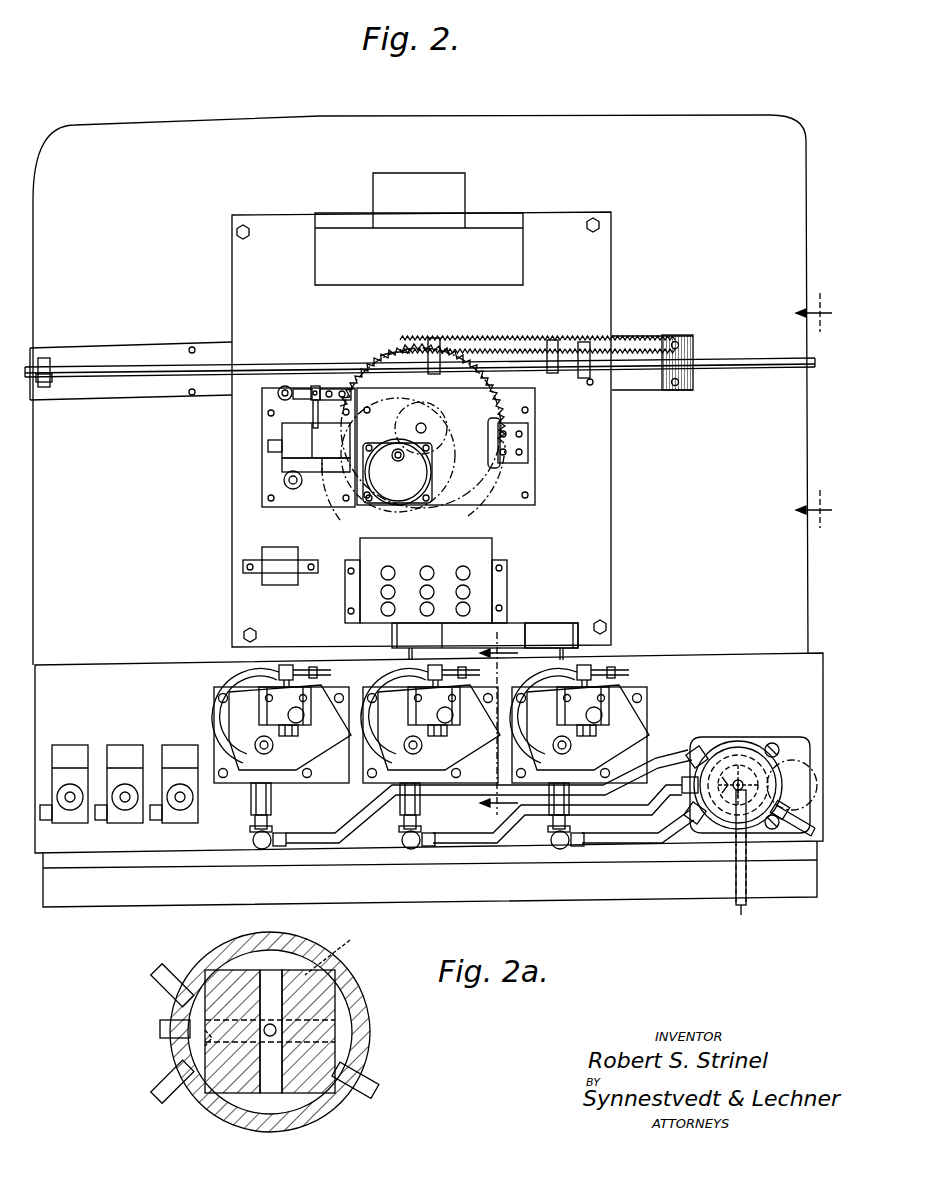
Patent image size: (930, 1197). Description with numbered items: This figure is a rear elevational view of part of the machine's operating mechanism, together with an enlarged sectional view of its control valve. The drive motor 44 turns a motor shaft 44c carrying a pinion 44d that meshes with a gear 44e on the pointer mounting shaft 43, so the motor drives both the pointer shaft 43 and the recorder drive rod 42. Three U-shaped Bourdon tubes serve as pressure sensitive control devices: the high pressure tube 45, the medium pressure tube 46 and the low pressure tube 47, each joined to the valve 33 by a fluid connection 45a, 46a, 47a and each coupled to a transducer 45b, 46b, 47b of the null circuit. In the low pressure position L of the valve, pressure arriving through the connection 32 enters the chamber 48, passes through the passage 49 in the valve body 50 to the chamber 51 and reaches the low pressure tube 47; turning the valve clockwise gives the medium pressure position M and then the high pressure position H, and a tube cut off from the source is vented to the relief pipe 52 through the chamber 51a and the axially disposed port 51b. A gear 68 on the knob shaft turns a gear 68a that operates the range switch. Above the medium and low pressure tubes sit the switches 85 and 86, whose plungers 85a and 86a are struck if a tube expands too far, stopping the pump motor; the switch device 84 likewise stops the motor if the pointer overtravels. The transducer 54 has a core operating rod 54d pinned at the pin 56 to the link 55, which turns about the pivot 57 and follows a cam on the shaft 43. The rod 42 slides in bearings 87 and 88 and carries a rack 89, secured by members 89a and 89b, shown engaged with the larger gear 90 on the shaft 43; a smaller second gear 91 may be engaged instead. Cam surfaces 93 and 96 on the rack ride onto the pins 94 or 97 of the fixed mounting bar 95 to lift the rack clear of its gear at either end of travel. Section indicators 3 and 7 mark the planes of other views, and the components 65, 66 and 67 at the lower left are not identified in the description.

In FIG. 2, the section line 3- 3 is at (814, 401).
In FIG. 2, the section line 7- 7 is at (501, 723).
In FIG. 2, the connection 32 is at (800, 834).
In FIG. 2A, the connection 32 is at (375, 1082).
In FIG. 2, the valve 33 is at (752, 845).
In FIG. 2A, the valve 33 is at (235, 945).
In FIG. 2, the recorder drive rod 42 is at (78, 370).
In FIG. 2, the pointer mounting shaft 43 is at (428, 419).
In FIG. 2, the drive motor 44 is at (398, 462).
In FIG. 2, the motor shaft 44c is at (345, 510).
In FIG. 2, the pinion 44d is at (395, 410).
In FIG. 2, the gear 44e is at (465, 510).
In FIG. 2, the high pressure tube 45 is at (230, 680).
In FIG. 2, the fluid connection 45a is at (348, 828).
In FIG. 2A, the fluid connection 45a is at (172, 975).
In FIG. 2, the transducer 45b is at (300, 735).
In FIG. 2, the medium pressure tube 46 is at (420, 688).
In FIG. 2, the fluid connection 46a is at (490, 832).
In FIG. 2A, the fluid connection 46a is at (160, 1028).
In FIG. 2, the transducer 46b is at (450, 735).
In FIG. 2, the low pressure tube 47 is at (580, 672).
In FIG. 2, the fluid connection 47a is at (610, 843).
In FIG. 2A, the fluid connection 47a is at (168, 1098).
In FIG. 2, the transducer 47b is at (600, 735).
In FIG. 2, the chamber 48 is at (788, 760).
In FIG. 2A, the chamber 48 is at (280, 1030).
In FIG. 2, the passage 49 is at (752, 814).
In FIG. 2A, the passage 49 is at (185, 1055).
In FIG. 2, the valve body 50 is at (727, 745).
In FIG. 2A, the valve body 50 is at (340, 985).
In FIG. 2, the chamber 51 is at (682, 782).
In FIG. 2, the chamber 51a is at (740, 755).
In FIG. 2A, the chamber 51a is at (273, 975).
In FIG. 2, the axially disposed port 51b is at (752, 768).
In FIG. 2A, the axially disposed port 51b is at (345, 1015).
In FIG. 2, the relief pipe 52 is at (455, 672).
In FIG. 2, the transducer 54 is at (282, 430).
In FIG. 2, the rod 54d is at (320, 394).
In FIG. 2, the link 55 is at (300, 389).
In FIG. 2, the pin 56 is at (318, 386).
In FIG. 2, the pivot 57 is at (285, 386).
In FIG. 2, the fuse 65 is at (70, 812).
In FIG. 2, the fuse 66 is at (125, 812).
In FIG. 2, the fuse 67 is at (180, 812).
In FIG. 2, the gear 68 is at (728, 807).
In FIG. 2, the gear 68a is at (805, 760).
In FIG. 2, the switch device 84 is at (528, 460).
In FIG. 2, the switch 85 is at (461, 593).
In FIG. 2, the plunger 85a is at (409, 653).
In FIG. 2, the switch 86 is at (551, 635).
In FIG. 2, the plunger 86a is at (565, 656).
In FIG. 2, the bearing 87 is at (45, 358).
In FIG. 2, the bearing 88 is at (584, 342).
In FIG. 2, the rack 89 is at (507, 336).
In FIG. 2, the member 89a is at (437, 338).
In FIG. 2, the member 89b is at (553, 340).
In FIG. 2, the gear 90 is at (385, 350).
In FIG. 2, the second gear 91 is at (530, 398).
In FIG. 2, the cam surface 93 is at (385, 356).
In FIG. 2, the pins 94 is at (192, 348).
In FIG. 2, the fixed mounting bar 95 is at (130, 400).
In FIG. 2, the cam surface 96 is at (694, 352).
In FIG. 2, the pins 97 is at (676, 342).
In FIG. 2A, the high pressure position H is at (360, 940).
In FIG. 2A, the low pressure position L is at (340, 1052).
In FIG. 2A, the medium pressure position M is at (320, 1105).